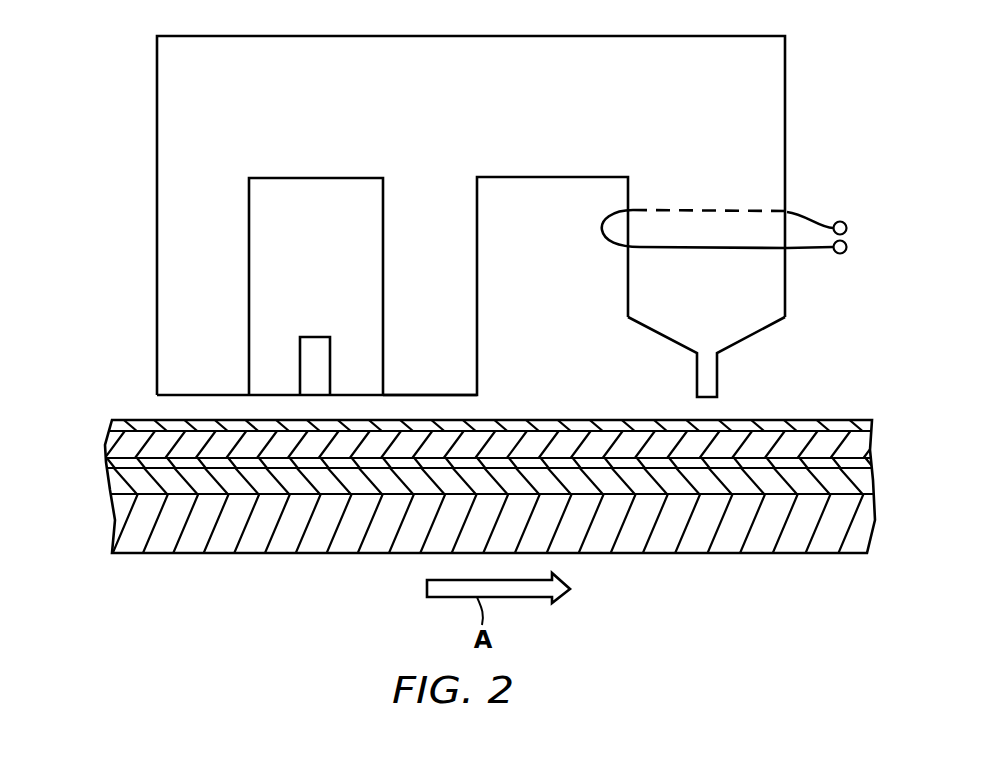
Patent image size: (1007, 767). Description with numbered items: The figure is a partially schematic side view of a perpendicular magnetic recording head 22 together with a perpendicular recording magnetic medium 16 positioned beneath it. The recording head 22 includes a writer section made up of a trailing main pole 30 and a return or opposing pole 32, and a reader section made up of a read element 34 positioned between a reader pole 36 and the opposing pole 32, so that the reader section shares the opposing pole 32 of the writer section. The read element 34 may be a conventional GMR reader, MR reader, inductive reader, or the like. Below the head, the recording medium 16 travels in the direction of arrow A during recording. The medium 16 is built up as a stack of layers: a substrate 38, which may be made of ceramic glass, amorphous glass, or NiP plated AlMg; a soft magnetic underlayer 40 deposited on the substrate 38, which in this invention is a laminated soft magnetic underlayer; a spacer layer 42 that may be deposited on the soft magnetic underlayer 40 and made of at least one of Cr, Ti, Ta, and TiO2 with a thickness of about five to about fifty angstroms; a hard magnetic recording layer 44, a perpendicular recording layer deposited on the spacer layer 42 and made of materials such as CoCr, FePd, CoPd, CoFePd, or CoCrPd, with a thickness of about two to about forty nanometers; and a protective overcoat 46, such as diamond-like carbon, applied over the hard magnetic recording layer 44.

The perpendicular recording magnetic medium 16 is at (92, 395).
The perpendicular magnetic recording head 22 is at (102, 62).
The trailing main pole 30 is at (718, 369).
The opposing pole 32 is at (414, 333).
The read element 34 is at (315, 345).
The reader pole 36 is at (188, 333).
The substrate 38 is at (125, 535).
The soft magnetic underlayer 40 is at (116, 487).
The spacer layer 42 is at (108, 462).
The hard magnetic recording layer 44 is at (110, 446).
The protective overcoat 46 is at (115, 427).